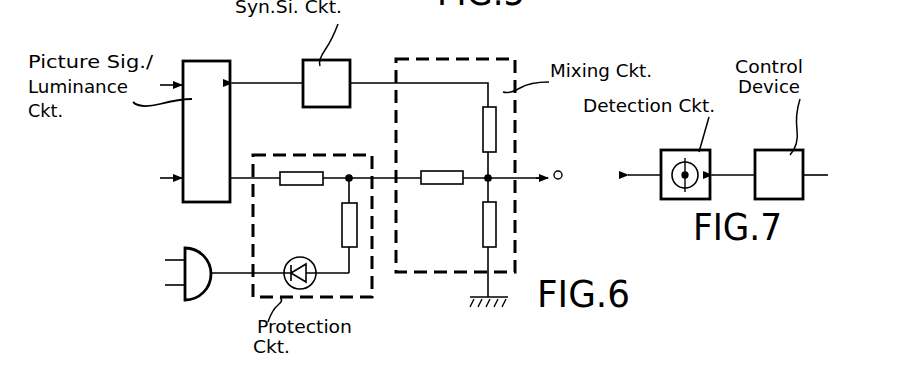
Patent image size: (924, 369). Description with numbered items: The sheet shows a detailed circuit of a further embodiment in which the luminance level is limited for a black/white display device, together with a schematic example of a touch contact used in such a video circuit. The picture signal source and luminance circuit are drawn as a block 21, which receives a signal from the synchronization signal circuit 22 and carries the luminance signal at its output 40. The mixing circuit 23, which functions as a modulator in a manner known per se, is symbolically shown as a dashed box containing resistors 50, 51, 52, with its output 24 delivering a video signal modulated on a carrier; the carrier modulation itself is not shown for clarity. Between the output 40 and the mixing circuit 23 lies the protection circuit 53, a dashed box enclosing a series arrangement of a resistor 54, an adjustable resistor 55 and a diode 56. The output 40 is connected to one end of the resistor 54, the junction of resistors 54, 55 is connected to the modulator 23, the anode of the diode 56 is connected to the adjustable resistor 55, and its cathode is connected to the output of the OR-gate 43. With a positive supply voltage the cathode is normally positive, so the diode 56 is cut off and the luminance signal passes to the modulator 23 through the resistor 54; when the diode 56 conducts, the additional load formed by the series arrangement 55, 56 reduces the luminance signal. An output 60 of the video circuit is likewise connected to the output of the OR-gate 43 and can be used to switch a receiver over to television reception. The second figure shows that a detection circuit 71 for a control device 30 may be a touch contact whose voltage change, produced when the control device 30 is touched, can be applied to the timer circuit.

In FIG. 6, the block 21 is at (222, 119).
In FIG. 6, the synchronization signal circuit 22 is at (342, 98).
In FIG. 6, the mixing circuit 23 is at (495, 77).
In FIG. 6, the output 24 is at (555, 172).
In FIG. 7, the control device 30 is at (780, 157).
In FIG. 6, the output 40 is at (232, 180).
In FIG. 6, the OR-gate 43 is at (210, 284).
In FIG. 6, the resistor 50 is at (483, 124).
In FIG. 6, the resistor 51 is at (440, 172).
In FIG. 6, the resistor 52 is at (483, 228).
In FIG. 6, the protection circuit 53 is at (346, 300).
In FIG. 6, the resistor 54 is at (313, 184).
In FIG. 6, the adjustable resistor 55 is at (342, 221).
In FIG. 6, the diode 56 is at (293, 259).
In FIG. 6, the output 60 is at (241, 272).
In FIG. 7, the detection circuit 71 is at (690, 155).